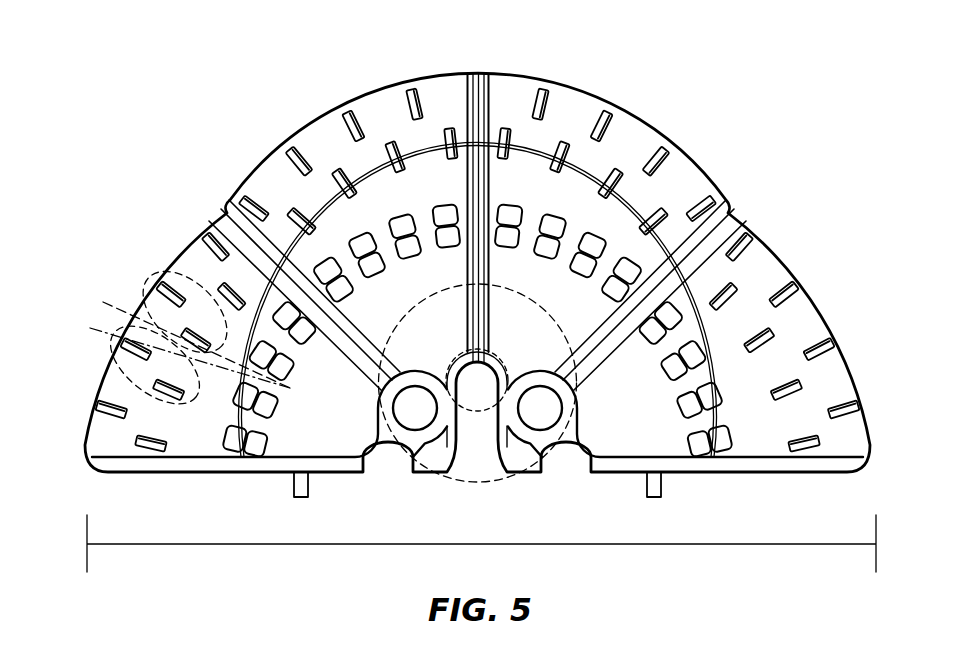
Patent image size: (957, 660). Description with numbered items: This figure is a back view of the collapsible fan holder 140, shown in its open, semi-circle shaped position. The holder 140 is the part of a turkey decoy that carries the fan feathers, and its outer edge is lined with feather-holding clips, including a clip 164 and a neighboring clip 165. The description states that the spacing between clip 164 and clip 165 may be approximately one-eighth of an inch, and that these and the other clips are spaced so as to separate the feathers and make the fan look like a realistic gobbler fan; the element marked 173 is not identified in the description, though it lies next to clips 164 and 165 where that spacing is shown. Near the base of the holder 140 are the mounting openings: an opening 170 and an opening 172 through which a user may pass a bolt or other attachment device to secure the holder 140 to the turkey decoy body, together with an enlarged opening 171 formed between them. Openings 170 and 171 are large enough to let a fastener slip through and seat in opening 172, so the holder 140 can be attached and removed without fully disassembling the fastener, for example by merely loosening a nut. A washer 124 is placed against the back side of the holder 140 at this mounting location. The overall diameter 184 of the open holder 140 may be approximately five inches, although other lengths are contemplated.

The collapsible fan holder 140 is at (781, 152).
The washer 124 is at (487, 482).
The clip 164 is at (108, 335).
The clip 165 is at (150, 280).
The opening 170 is at (463, 467).
The enlarged opening 171 is at (505, 428).
The opening 172 is at (463, 390).
The axis line 173 is at (103, 302).
The diameter 184 is at (163, 545).